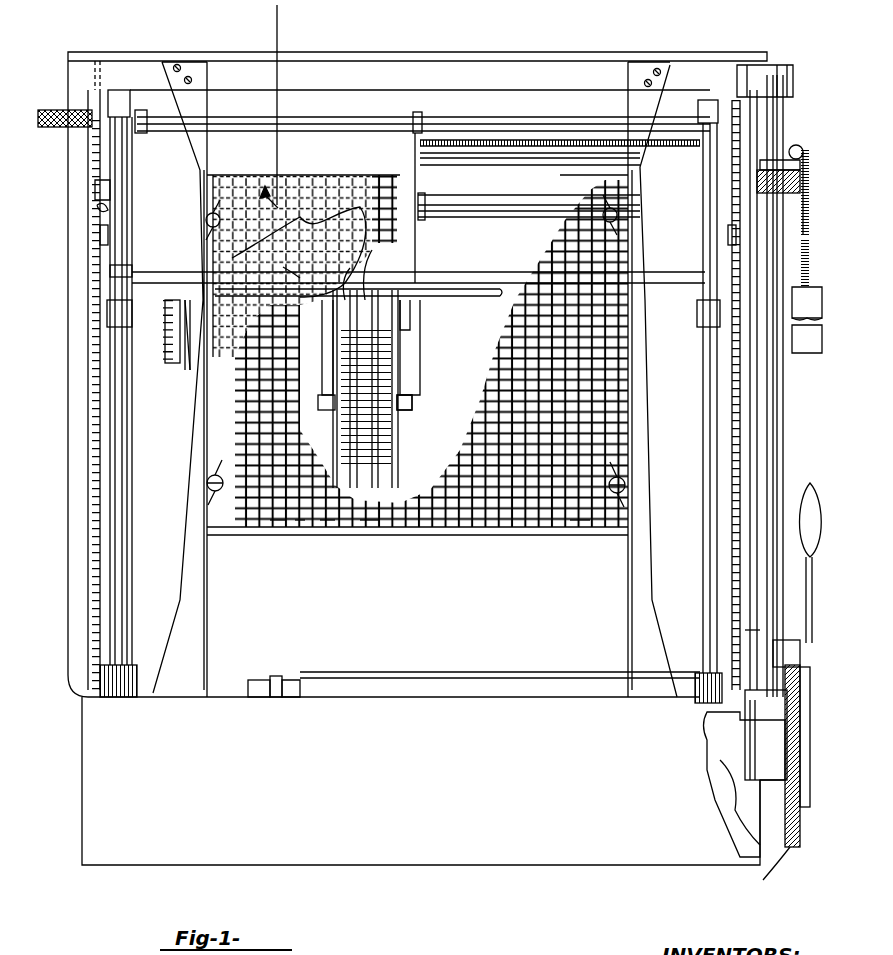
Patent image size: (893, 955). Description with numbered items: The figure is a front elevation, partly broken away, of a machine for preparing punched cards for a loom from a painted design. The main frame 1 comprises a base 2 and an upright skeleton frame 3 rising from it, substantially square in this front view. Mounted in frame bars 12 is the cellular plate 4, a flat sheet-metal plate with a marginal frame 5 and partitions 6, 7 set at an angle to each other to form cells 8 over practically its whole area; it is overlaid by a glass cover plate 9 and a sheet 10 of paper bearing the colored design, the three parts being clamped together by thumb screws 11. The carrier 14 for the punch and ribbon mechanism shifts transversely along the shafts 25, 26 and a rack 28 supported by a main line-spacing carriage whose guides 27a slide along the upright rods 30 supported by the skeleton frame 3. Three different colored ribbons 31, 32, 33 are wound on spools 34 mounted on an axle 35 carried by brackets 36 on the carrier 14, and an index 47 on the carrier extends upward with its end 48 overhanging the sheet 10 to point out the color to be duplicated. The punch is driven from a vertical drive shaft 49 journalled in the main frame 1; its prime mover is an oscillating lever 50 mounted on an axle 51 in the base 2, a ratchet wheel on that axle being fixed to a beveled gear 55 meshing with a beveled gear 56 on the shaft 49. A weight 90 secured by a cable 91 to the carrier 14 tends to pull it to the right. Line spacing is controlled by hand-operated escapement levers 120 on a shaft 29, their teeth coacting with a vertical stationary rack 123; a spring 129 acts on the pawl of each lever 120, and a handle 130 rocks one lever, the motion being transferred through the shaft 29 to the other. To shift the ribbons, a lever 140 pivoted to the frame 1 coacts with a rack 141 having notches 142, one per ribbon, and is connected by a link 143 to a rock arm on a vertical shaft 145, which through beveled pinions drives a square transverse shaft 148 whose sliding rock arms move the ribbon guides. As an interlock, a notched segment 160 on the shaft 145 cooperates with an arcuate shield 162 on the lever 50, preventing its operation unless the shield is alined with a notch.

The main frame 1 is at (46, 607).
The base 2 is at (538, 858).
The upright skeleton frame 3 is at (70, 398).
The cellular plate 4 is at (440, 525).
The marginal frame 5 is at (367, 530).
The partition 6 is at (300, 528).
The partition 7 is at (280, 525).
The cells 8 is at (327, 525).
The cover plate 9 is at (580, 530).
The sheet 10 is at (268, 298).
The thumb screws 11 is at (208, 483).
The frame bars 12 is at (195, 570).
The carrier 14 is at (418, 240).
The shaft 25 is at (108, 270).
The shaft 26 is at (500, 215).
The guides 27a is at (108, 312).
The rack 28 is at (496, 290).
The shaft 29 is at (542, 163).
The upright rods 30 is at (122, 528).
The ribbon 31 is at (170, 365).
The ribbon 32 is at (185, 370).
The ribbon 33 is at (345, 300).
The spools 34 is at (395, 433).
The axle 35 is at (414, 400).
The brackets 36 is at (322, 340).
The index 47 is at (280, 40).
The end of index 48 is at (280, 200).
The drive shaft 49 is at (775, 428).
The oscillating lever 50 is at (810, 495).
The axle 51 is at (805, 800).
The beveled gear 55 is at (766, 876).
The beveled gear 56 is at (790, 648).
The weight 90 is at (806, 348).
The cable 91 is at (807, 160).
The lever 120 is at (108, 238).
The vertical stationary rack 123 is at (96, 518).
The spring 129 is at (98, 204).
The handle 130 is at (55, 127).
The lever 140 is at (275, 697).
The rack 141 is at (258, 697).
The notches 142 is at (312, 697).
The link 143 is at (440, 673).
The shaft 145 is at (750, 630).
The shaft 148 is at (606, 120).
The segment 160 is at (735, 770).
The arcuate shield 162 is at (750, 735).